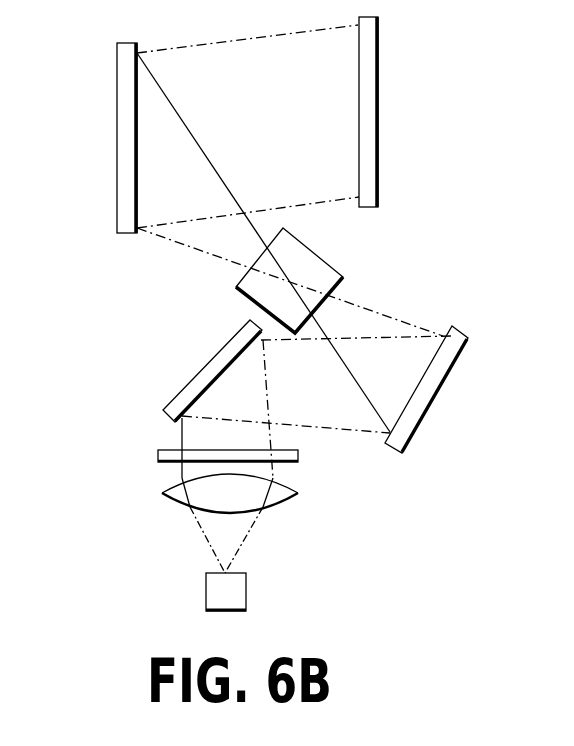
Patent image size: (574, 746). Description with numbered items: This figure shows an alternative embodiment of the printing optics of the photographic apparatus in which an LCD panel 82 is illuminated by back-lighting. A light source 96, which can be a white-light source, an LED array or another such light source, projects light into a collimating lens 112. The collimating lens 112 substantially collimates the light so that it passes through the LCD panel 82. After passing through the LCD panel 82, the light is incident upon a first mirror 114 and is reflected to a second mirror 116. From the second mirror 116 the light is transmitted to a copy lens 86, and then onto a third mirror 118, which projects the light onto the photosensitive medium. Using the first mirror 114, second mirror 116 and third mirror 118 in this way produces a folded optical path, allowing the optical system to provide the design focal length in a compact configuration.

The LCD panel 82 is at (368, 184).
The copy lens 86 is at (323, 273).
The light source 96 is at (232, 591).
The collimating lens 112 is at (283, 502).
The first mirror 114 is at (203, 377).
The second mirror 116 is at (445, 362).
The third mirror 118 is at (122, 200).